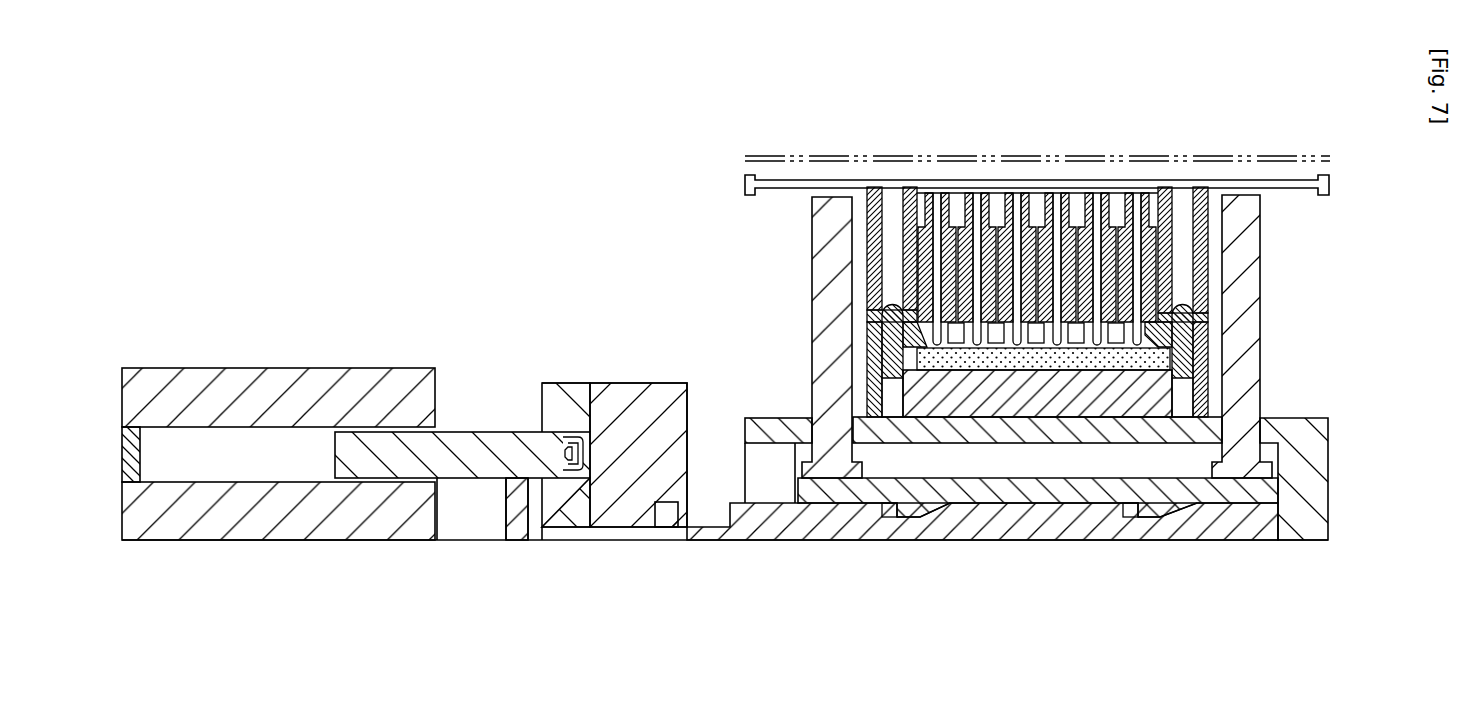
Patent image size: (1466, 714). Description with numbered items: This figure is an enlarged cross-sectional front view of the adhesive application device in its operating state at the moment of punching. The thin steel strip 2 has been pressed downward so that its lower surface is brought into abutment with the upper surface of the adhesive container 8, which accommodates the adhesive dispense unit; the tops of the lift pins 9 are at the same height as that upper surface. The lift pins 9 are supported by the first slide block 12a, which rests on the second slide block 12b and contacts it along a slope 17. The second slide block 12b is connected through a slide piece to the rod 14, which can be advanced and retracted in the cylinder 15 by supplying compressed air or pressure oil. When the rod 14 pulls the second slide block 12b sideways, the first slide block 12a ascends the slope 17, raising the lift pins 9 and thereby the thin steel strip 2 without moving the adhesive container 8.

The thin steel strip 2 is at (1022, 154).
The adhesive container 8 is at (862, 200).
The lift pins 9 is at (813, 268).
The first slide block 12a is at (1118, 478).
The second slide block 12b is at (1237, 530).
The rod 14 is at (473, 478).
The cylinder 15 is at (165, 368).
The slope 17 is at (1178, 503).